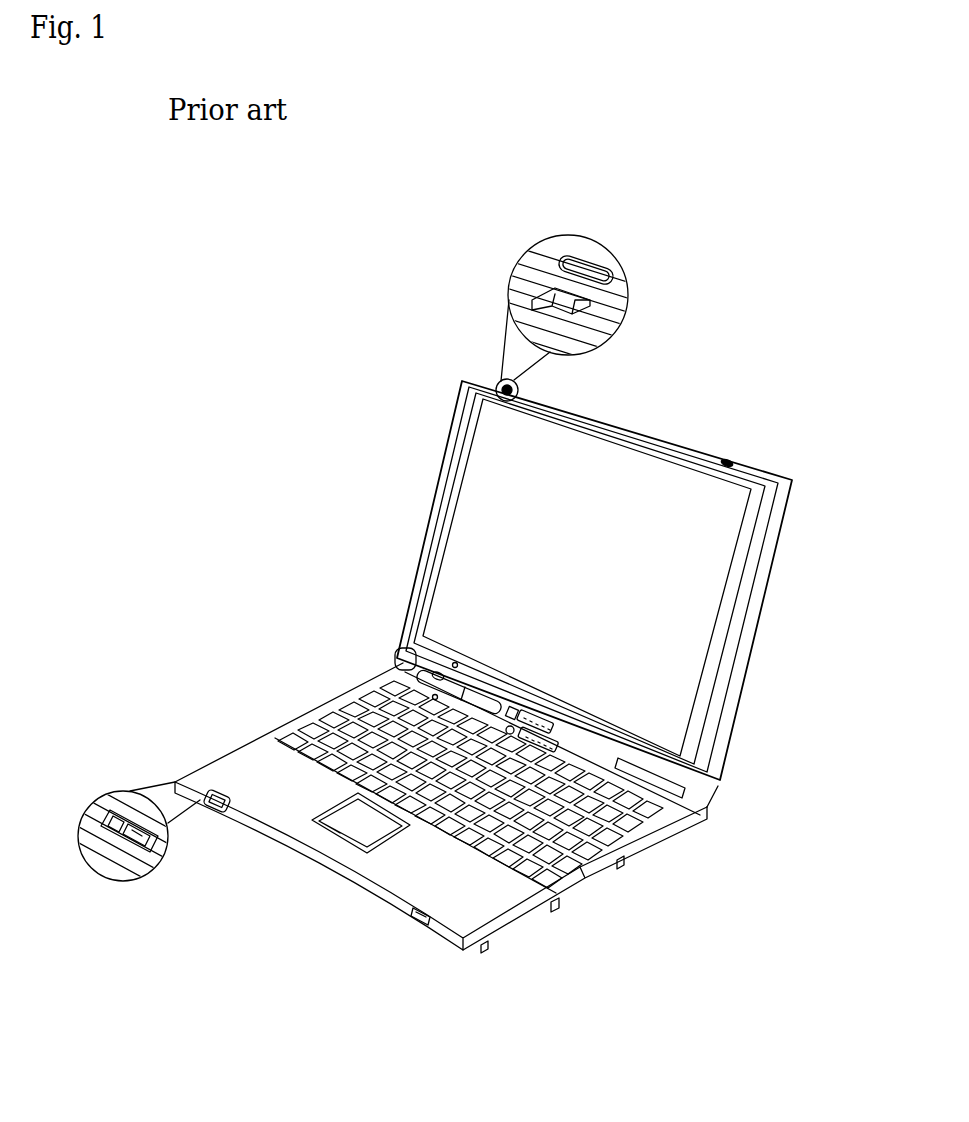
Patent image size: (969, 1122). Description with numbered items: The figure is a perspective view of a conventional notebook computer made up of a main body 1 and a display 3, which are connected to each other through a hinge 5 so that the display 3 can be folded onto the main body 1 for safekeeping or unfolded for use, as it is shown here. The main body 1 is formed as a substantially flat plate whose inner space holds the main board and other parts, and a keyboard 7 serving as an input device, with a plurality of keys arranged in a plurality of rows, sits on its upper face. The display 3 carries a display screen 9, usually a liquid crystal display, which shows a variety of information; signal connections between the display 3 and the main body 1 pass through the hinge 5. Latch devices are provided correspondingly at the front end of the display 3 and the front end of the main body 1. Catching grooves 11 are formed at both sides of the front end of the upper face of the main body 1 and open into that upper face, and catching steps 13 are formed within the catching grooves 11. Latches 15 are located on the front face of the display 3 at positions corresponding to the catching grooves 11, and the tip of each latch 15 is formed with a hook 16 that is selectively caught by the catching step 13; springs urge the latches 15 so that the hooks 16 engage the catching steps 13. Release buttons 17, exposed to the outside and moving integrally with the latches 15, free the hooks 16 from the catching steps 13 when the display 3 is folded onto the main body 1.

The main body 1 is at (247, 767).
The display 3 is at (757, 602).
The hinge 5 is at (400, 653).
The keyboard 7 is at (600, 851).
The display screen 9 is at (468, 525).
The catching groove 11 is at (110, 833).
The catching step 13 is at (133, 847).
The latch 15 is at (547, 313).
The hook 16 is at (570, 312).
The release button 17 is at (590, 267).